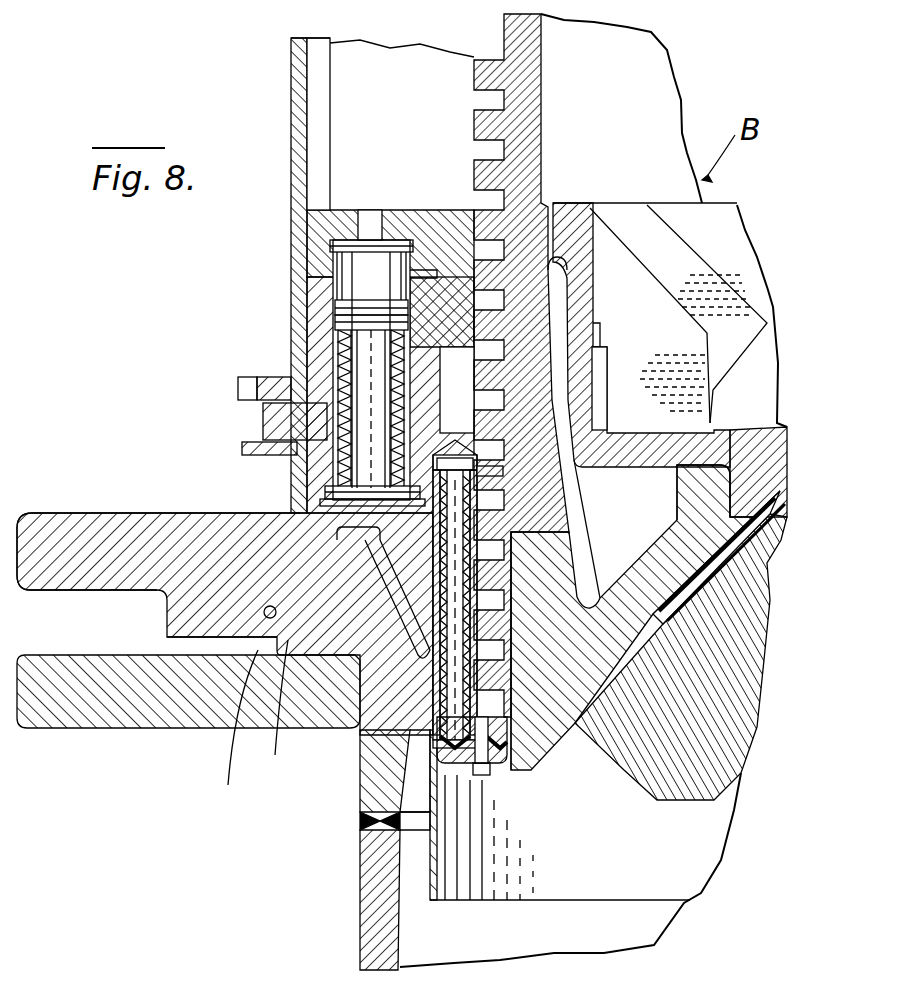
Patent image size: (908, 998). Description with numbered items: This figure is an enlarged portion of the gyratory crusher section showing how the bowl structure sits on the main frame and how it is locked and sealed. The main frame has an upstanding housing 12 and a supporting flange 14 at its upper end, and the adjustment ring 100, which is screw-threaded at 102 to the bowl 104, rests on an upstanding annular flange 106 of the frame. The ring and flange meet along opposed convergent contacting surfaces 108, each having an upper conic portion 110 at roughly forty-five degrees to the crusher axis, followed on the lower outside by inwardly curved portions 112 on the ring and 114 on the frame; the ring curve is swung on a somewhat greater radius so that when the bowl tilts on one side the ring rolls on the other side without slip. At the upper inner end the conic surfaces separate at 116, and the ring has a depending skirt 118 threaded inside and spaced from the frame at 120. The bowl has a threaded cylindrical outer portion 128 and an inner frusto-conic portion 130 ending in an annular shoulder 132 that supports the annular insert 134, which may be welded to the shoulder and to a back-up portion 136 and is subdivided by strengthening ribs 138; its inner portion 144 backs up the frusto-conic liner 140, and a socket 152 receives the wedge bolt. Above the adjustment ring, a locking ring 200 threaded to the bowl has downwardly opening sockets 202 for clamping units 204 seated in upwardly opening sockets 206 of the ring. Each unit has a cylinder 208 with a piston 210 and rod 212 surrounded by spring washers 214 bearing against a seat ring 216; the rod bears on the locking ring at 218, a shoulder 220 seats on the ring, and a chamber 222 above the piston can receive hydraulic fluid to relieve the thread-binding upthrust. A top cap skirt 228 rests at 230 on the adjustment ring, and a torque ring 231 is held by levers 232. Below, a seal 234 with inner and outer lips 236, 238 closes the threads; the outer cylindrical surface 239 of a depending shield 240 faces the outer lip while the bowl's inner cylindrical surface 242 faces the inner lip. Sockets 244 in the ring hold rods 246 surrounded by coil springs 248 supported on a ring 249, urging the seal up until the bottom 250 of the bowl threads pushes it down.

The upstanding housing 12 is at (362, 930).
The supporting flange 14 is at (100, 730).
The adjustment ring 100 is at (55, 525).
The screw threads 102 is at (530, 630).
The bowl 104 is at (545, 150).
The upstanding annular flange 106 is at (263, 705).
The contacting surfaces 108 is at (247, 724).
The upper conic portion 110 is at (300, 580).
The inwardly curved portion 112 is at (270, 605).
The inwardly curved portion 114 is at (265, 632).
The separation of conic surfaces 116 is at (362, 540).
The depending skirt 118 is at (418, 585).
The space 120 is at (445, 668).
The cylindrical outer portion 128 is at (553, 450).
The frusto-conic portion 130 is at (680, 490).
The annular shoulder 132 is at (712, 435).
The annular insert 134 is at (595, 335).
The back-up portion 136 is at (567, 235).
The strengthening ribs 138 is at (625, 290).
The liner 140 is at (640, 770).
The inner portion of insert 144 is at (785, 380).
The socket 152 is at (600, 375).
The locking ring 200 is at (325, 233).
The downwardly opening socket 202 is at (335, 252).
The clamping unit 204 is at (360, 348).
The upwardly opening socket 206 is at (345, 493).
The cylinder 208 is at (336, 325).
The piston 210 is at (340, 310).
The rod 212 is at (362, 373).
The spring washers 214 is at (340, 465).
The seat ring 216 is at (335, 502).
The rod bearing point 218 is at (385, 240).
The shoulder 220 is at (290, 420).
The chamber 222 is at (340, 292).
The skirt 228 is at (296, 99).
The skirt seat 230 is at (272, 390).
The torque ring 231 is at (238, 390).
The levers 232 is at (245, 449).
The seal 234 is at (495, 782).
The inner lip 236 is at (500, 770).
The outer lip 238 is at (380, 770).
The outer cylindrical surface 239 is at (440, 903).
The depending shield 240 is at (430, 905).
The inner cylindrical surface 242 is at (520, 660).
The socket 244 is at (467, 610).
The rod 246 is at (427, 740).
The coil spring 248 is at (470, 560).
The ring 249 is at (425, 760).
The bottom of bowl threads 250 is at (495, 540).